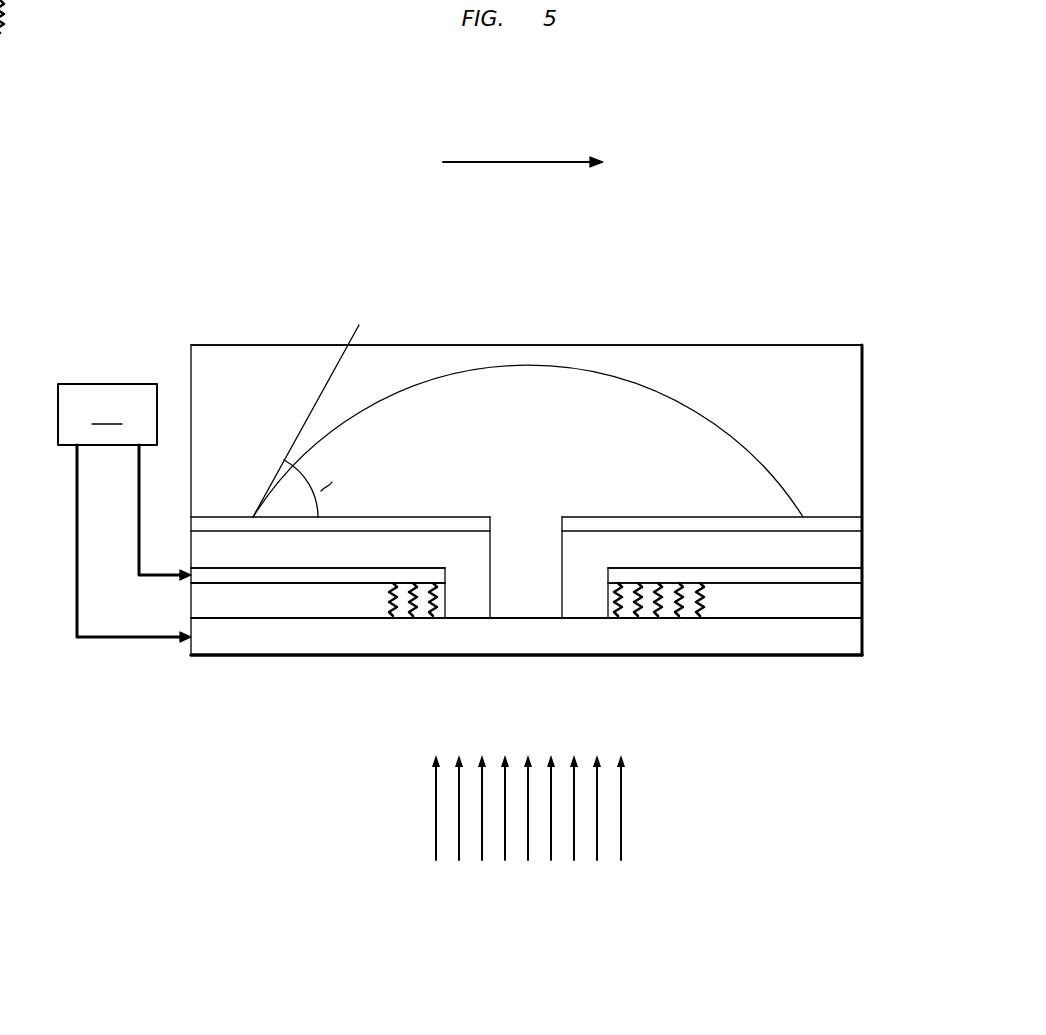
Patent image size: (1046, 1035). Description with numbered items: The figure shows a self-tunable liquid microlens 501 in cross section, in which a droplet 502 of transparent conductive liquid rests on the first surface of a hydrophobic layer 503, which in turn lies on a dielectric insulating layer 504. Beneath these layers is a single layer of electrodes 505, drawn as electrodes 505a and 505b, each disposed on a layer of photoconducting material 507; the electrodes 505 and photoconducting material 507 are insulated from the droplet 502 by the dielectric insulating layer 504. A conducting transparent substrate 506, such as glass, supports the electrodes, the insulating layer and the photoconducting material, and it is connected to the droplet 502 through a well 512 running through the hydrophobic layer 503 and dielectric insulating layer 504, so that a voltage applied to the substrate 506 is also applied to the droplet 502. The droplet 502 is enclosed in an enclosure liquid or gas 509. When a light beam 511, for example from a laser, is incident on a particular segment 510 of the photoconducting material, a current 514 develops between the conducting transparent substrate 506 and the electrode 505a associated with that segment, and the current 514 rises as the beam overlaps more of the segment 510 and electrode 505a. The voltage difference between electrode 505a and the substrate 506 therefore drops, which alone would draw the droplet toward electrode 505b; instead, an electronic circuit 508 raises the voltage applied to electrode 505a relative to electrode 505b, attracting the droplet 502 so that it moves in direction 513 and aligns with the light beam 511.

The self-tunable liquid microlens 501 is at (657, 270).
The droplet 502 is at (702, 412).
The hydrophobic layer 503 is at (468, 516).
The dielectric insulating layer 504 is at (865, 551).
The electrodes 505 is at (230, 570).
The electrode 505a is at (658, 568).
The electrode 505b is at (398, 568).
The conducting transparent substrate 506 is at (338, 640).
The photoconducting material 507 is at (188, 600).
The electronic circuit 508 is at (124, 532).
The enclosure liquid or gas 509 is at (265, 344).
The segment of photoconducting material 510 is at (782, 613).
The light beam 511 is at (433, 813).
The well 512 is at (530, 516).
The direction 513 is at (513, 160).
The current 514 is at (655, 613).